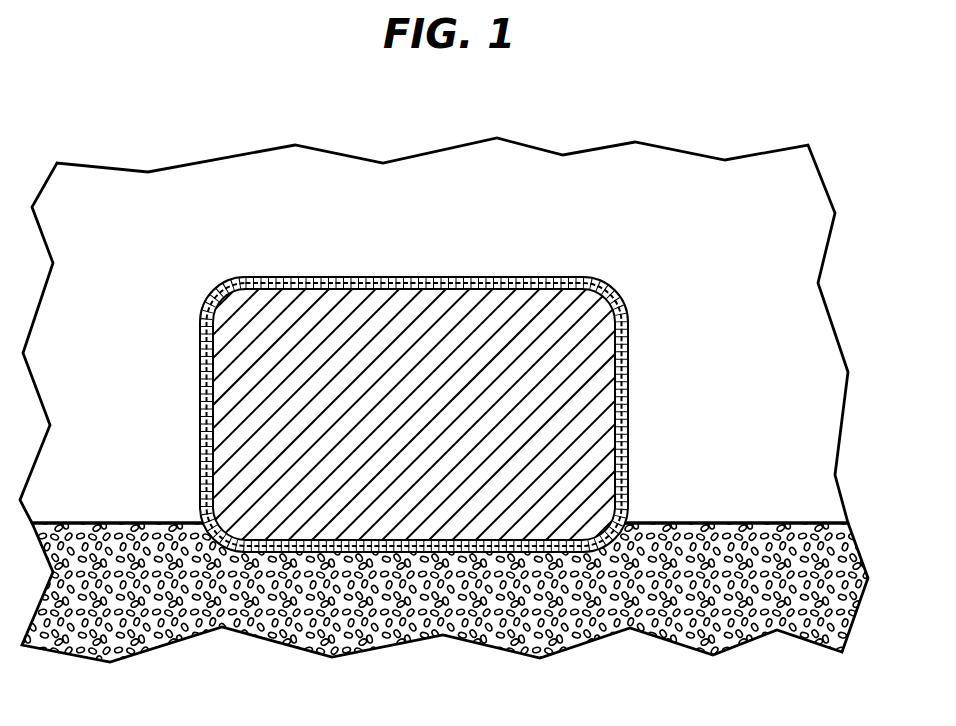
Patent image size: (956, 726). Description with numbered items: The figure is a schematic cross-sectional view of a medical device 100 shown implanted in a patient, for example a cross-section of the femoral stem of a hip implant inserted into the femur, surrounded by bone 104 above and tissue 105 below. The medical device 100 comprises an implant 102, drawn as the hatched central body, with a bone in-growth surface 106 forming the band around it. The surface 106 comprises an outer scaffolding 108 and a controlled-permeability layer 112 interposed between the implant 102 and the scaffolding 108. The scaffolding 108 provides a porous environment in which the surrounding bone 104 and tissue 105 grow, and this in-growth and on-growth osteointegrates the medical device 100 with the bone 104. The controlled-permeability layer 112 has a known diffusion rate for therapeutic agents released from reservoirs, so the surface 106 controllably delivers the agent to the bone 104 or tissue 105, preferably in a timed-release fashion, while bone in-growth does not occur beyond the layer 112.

The medical device 100 is at (431, 406).
The implant 102 is at (297, 452).
The bone 104 is at (238, 185).
The tissue 105 is at (626, 602).
The bone in-growth surface 106 is at (465, 406).
The outer scaffolding 108 is at (623, 303).
The controlled-permeability layer 112 is at (628, 413).